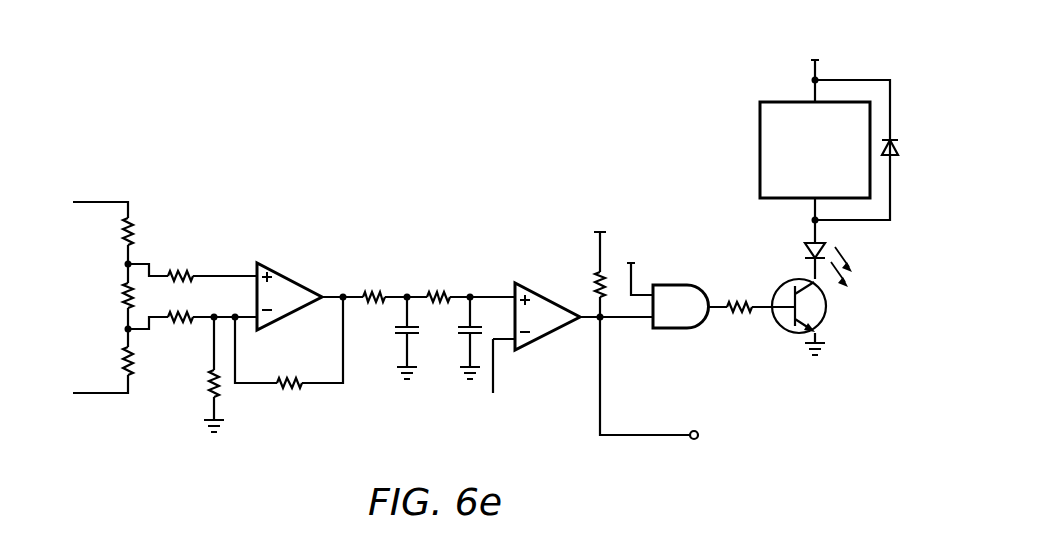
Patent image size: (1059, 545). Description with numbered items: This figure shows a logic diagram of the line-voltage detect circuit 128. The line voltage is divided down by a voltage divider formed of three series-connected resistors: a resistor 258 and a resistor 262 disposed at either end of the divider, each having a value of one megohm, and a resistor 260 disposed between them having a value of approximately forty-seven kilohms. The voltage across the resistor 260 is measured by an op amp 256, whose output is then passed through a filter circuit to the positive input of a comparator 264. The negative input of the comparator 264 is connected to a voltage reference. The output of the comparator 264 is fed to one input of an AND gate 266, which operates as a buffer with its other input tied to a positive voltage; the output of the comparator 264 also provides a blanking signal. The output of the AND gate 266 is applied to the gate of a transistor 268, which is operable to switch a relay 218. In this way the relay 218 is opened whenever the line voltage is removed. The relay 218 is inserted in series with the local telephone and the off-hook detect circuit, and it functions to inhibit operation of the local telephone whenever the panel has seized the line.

The line-voltage detect circuit 128 is at (345, 437).
The relay 218 is at (797, 187).
The op amp 256 is at (287, 285).
The resistor 258 is at (131, 232).
The resistor 260 is at (127, 291).
The resistor 262 is at (127, 357).
The comparator 264 is at (543, 300).
The AND gate 266 is at (687, 290).
The transistor 268 is at (828, 306).